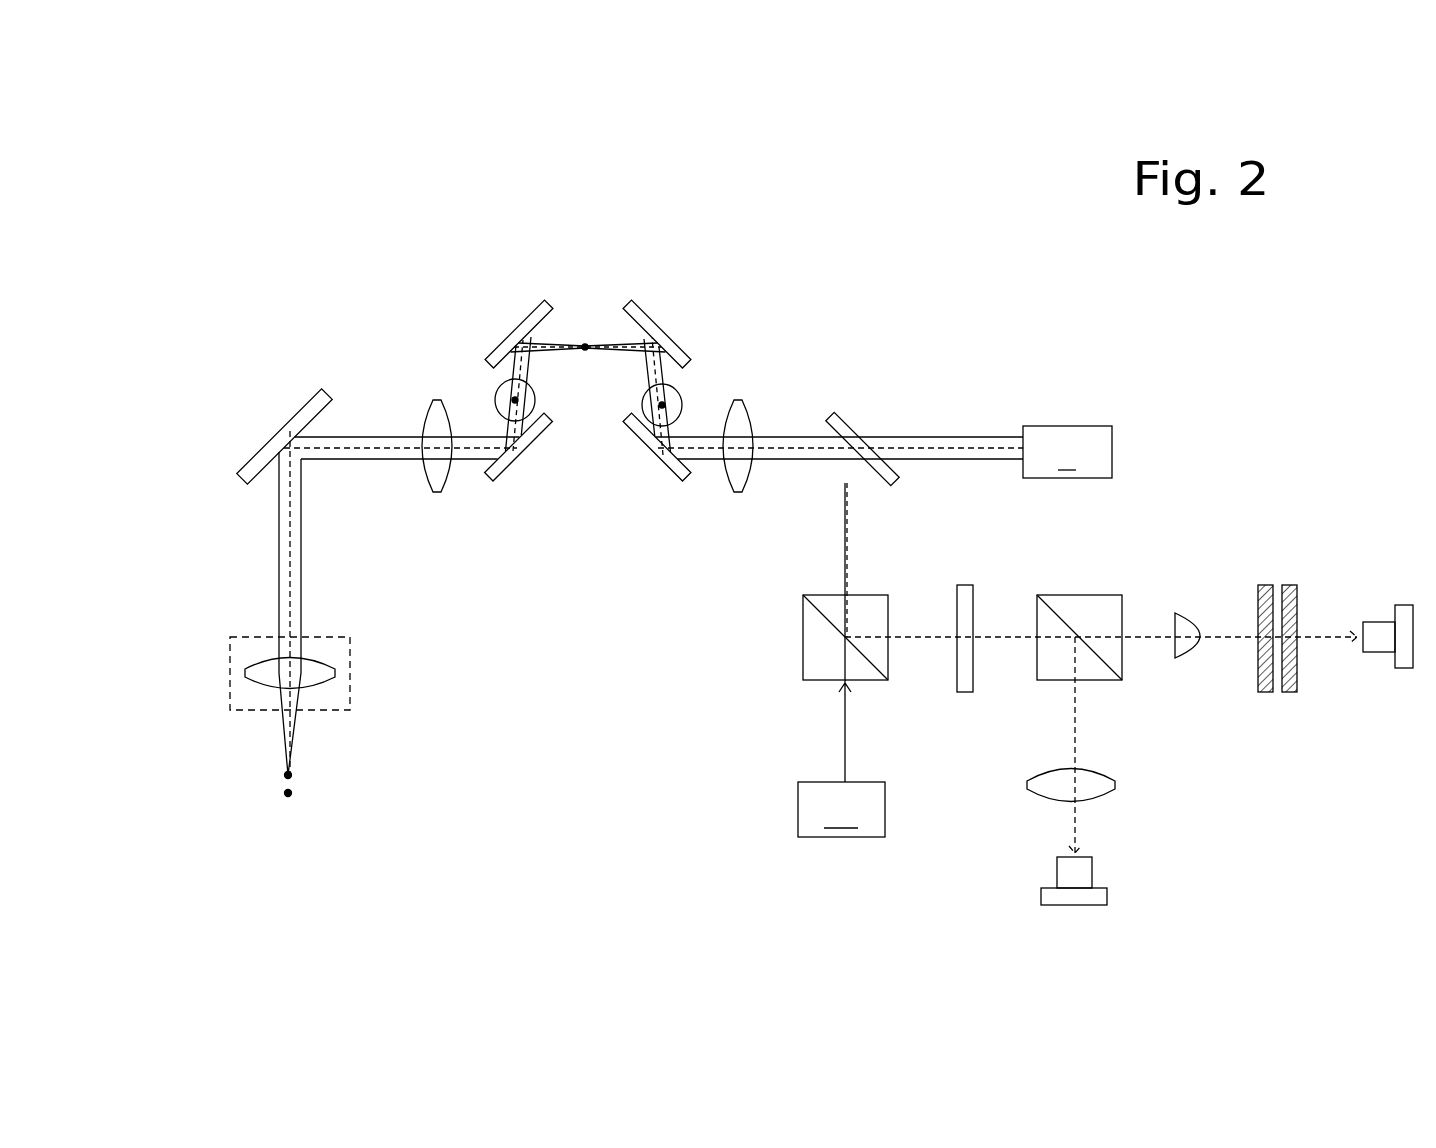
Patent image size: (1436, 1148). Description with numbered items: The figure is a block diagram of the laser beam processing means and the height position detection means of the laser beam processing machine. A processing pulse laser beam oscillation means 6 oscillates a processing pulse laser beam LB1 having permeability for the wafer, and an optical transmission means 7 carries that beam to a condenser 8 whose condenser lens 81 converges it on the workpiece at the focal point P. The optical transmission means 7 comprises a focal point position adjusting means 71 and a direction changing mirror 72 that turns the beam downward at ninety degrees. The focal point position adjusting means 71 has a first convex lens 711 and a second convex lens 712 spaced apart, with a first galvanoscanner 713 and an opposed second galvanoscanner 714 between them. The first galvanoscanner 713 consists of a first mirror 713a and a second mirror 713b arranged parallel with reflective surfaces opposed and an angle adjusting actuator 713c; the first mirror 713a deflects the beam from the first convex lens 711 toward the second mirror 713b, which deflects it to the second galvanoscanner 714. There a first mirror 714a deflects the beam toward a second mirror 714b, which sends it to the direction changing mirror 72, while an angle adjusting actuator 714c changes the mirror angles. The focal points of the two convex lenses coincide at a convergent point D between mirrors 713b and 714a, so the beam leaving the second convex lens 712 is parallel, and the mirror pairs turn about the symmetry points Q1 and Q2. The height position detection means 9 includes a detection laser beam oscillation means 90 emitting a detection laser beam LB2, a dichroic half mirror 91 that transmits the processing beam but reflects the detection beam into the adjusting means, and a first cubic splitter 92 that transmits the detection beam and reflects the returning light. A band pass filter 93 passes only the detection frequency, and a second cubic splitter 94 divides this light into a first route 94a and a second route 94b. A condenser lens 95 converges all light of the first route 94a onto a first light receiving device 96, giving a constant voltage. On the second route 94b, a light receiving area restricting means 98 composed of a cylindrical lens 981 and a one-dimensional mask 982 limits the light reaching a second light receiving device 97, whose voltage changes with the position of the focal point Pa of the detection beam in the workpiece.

The processing pulse laser beam oscillation means 6 is at (1067, 452).
The optical transmission means 7 is at (320, 216).
The focal point position adjusting means 71 is at (613, 170).
The first convex lens 711 is at (738, 497).
The second convex lens 712 is at (437, 497).
The first galvanoscanner 713 is at (669, 251).
The first mirror 713a is at (655, 463).
The second mirror 713b is at (668, 330).
The angle adjusting actuator 713c is at (682, 400).
The second galvanoscanner 714 is at (507, 250).
The first mirror 714a is at (503, 338).
The second mirror 714b is at (517, 463).
The angle adjusting actuator 714c is at (497, 392).
The direction changing mirror 72 is at (277, 430).
The condenser 8 is at (260, 634).
The condenser lens 81 is at (250, 667).
The height position detection means 9 is at (695, 748).
The detection laser beam oscillation means 90 is at (841, 809).
The dichroic half mirror 91 is at (842, 412).
The first cubic splitter 92 is at (803, 640).
The band pass filter 93 is at (962, 582).
The second cubic splitter 94 is at (1082, 594).
The first route 94a is at (1075, 731).
The second route 94b is at (1148, 637).
The condenser lens 95 is at (1112, 787).
The first light receiving device 96 is at (1110, 897).
The second light receiving device 97 is at (1404, 672).
The light receiving area restricting means 98 is at (1234, 552).
The cylindrical lens 981 is at (1186, 662).
The one-dimensional mask 982 is at (1290, 695).
The convergent point D is at (585, 343).
The turning point Q1 is at (646, 404).
The turning point Q2 is at (526, 392).
The focal point P is at (292, 773).
The focal point Pa is at (292, 793).
The processing pulse laser beam LB1 is at (917, 437).
The detection laser beam LB2 is at (845, 737).